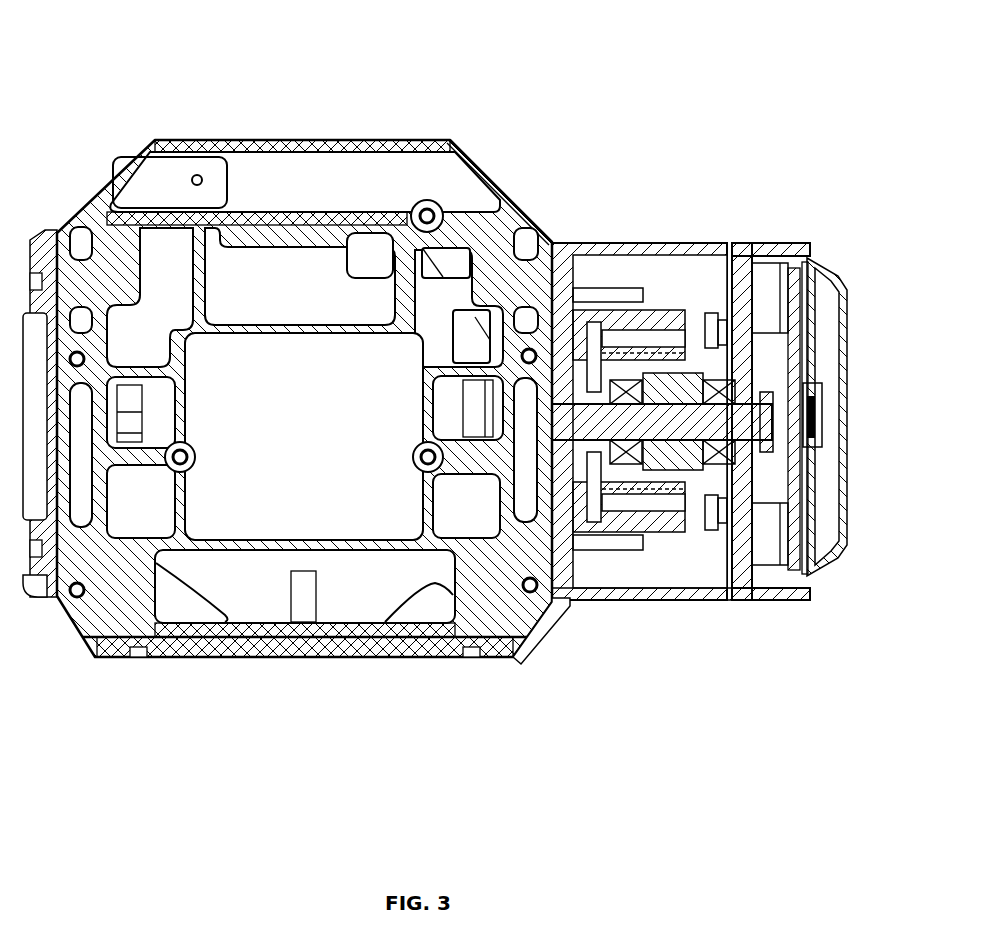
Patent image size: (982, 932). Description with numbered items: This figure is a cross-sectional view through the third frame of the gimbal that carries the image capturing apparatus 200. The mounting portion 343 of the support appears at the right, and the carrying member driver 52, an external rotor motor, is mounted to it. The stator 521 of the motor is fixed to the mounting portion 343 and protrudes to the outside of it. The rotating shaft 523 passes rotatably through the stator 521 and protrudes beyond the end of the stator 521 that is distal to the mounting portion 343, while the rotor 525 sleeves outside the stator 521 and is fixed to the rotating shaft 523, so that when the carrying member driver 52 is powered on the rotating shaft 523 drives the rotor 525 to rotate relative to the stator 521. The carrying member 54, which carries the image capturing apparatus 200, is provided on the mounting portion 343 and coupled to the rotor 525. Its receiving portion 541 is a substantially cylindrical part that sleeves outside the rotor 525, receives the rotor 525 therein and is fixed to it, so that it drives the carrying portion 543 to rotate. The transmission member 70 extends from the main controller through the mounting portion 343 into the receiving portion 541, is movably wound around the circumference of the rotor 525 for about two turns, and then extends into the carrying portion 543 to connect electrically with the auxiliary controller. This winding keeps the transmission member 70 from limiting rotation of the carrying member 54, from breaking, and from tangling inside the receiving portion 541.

The image capturing apparatus 200 is at (272, 82).
The carrying member driver 52 is at (872, 193).
The stator 521 is at (707, 417).
The rotating shaft 523 is at (763, 380).
The rotor 525 is at (650, 312).
The carrying member 54 is at (660, 717).
The receiving portion 541 is at (640, 595).
The carrying portion 543 is at (503, 647).
The transmission member 70 is at (627, 543).
The mounting portion 343 is at (835, 560).